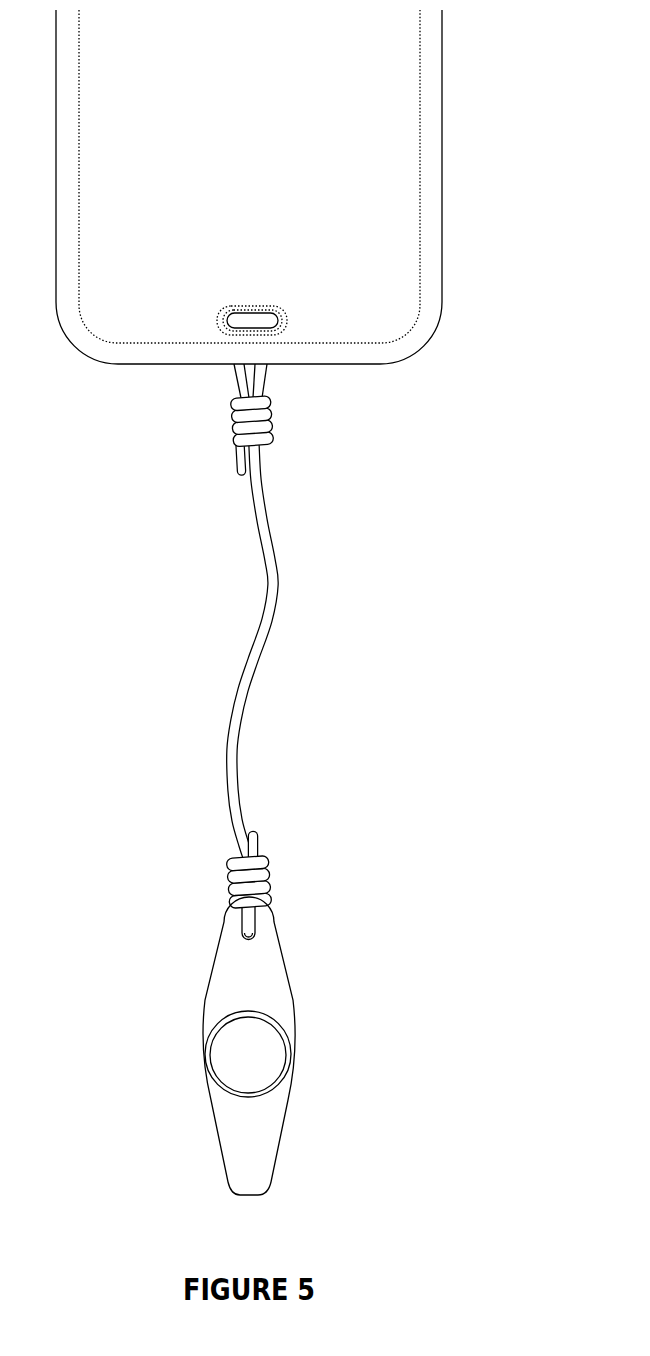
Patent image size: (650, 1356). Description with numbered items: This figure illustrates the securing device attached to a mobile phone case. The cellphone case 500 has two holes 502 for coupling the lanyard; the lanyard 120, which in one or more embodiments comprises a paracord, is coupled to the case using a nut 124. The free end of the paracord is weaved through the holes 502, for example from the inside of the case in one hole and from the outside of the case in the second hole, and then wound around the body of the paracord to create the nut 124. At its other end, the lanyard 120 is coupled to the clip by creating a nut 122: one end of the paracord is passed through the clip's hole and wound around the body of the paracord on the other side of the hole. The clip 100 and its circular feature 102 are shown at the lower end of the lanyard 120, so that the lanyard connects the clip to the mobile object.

The cellphone case 500 is at (418, 249).
The holes 502 is at (203, 346).
The lanyard 120 is at (290, 595).
The nut 124 is at (283, 423).
The nut 122 is at (278, 862).
The tag device 100 is at (281, 1135).
The button 102 is at (293, 1047).